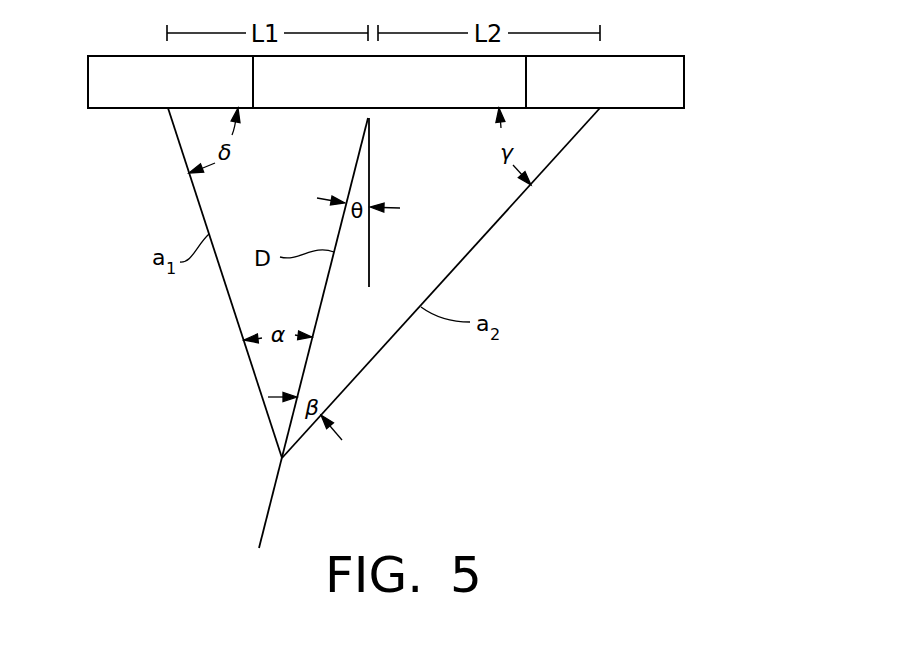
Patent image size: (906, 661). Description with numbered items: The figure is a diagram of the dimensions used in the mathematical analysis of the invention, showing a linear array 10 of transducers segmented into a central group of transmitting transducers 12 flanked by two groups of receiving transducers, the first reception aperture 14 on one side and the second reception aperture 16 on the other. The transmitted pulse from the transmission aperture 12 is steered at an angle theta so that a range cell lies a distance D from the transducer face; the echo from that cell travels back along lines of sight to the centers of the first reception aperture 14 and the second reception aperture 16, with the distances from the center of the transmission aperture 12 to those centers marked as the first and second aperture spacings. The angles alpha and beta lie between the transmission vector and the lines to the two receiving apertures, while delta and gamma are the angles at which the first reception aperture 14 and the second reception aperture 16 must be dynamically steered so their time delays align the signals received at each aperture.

The array 10 is at (714, 62).
The transmitting transducers 12 is at (414, 122).
The first reception aperture 14 is at (103, 122).
The second reception aperture 16 is at (657, 122).